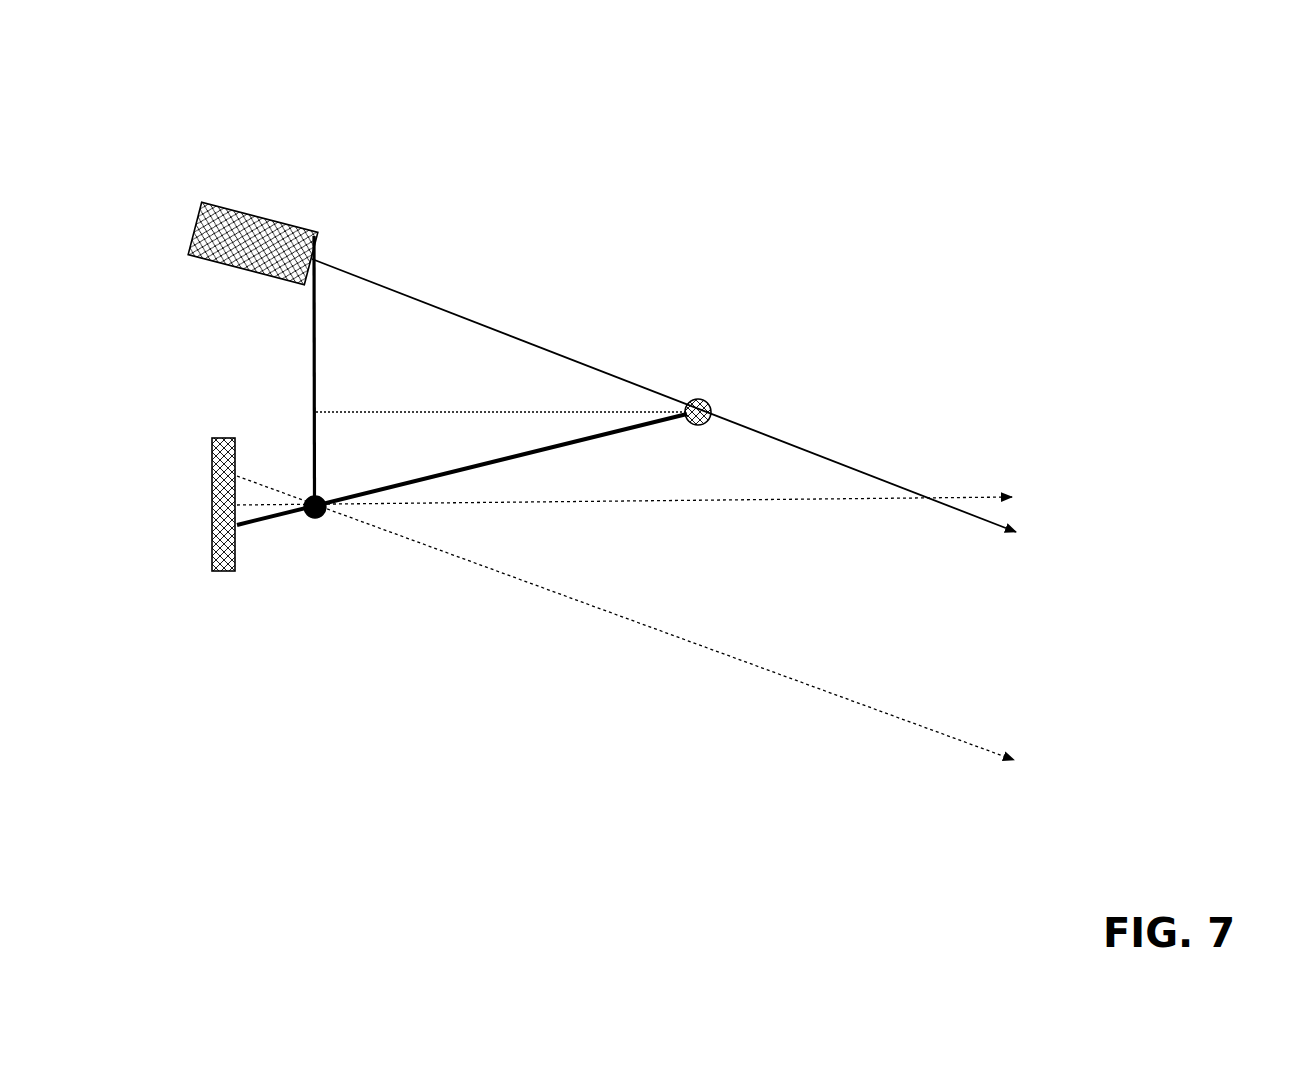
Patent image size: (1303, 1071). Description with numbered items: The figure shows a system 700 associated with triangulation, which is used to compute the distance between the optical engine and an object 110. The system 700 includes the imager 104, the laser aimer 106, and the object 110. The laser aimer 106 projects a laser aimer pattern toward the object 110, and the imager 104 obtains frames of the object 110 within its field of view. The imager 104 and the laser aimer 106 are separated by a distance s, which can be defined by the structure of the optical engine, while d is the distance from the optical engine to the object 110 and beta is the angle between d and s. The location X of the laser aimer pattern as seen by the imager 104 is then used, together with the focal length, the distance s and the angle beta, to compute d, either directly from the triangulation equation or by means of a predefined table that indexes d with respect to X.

The system 700 is at (1092, 66).
The laser aimer 106 is at (200, 211).
The imager 104 is at (217, 573).
The object 110 is at (698, 425).